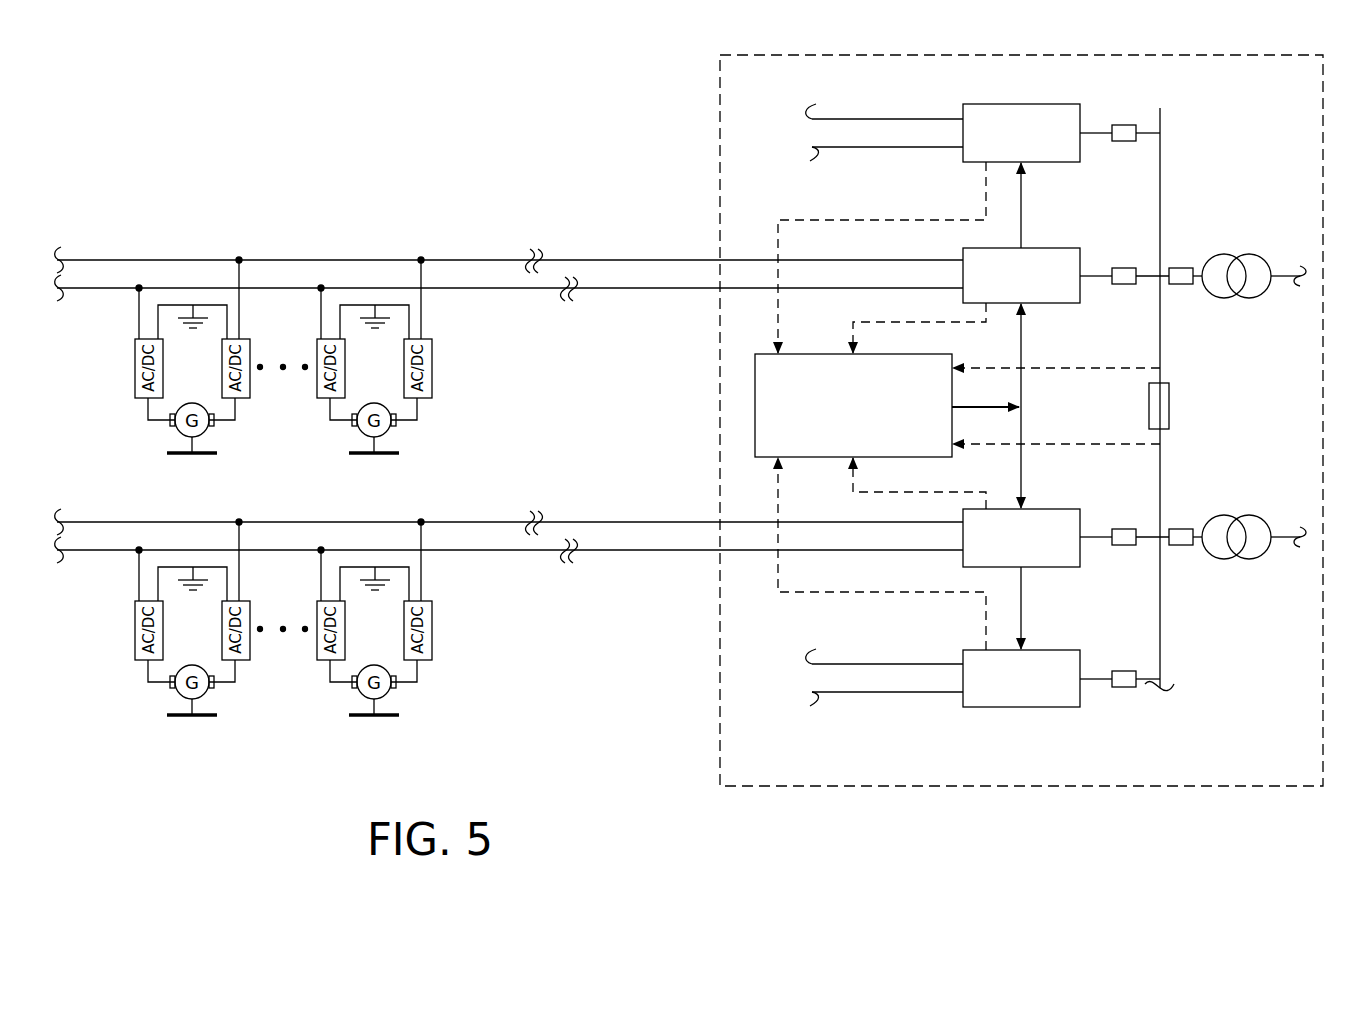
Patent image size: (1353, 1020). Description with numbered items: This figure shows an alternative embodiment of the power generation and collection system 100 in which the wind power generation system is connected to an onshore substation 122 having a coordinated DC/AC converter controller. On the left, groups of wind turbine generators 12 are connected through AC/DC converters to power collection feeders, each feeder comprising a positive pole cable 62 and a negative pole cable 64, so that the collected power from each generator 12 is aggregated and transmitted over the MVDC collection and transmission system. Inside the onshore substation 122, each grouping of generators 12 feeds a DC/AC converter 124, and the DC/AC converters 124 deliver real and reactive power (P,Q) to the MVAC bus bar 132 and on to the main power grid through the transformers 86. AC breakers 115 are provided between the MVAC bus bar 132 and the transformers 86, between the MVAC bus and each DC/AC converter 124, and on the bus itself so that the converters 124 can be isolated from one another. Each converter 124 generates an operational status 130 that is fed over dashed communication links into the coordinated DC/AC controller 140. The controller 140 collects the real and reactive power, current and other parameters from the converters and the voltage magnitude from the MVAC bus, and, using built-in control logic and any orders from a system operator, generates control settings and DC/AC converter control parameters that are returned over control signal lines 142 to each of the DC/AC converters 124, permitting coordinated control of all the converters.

The wind turbine generator 12 is at (158, 430).
The positive pole cable 62 is at (680, 260).
The negative pole cable 64 is at (648, 290).
The transformer 86 is at (1236, 298).
The power generation and collection system 100 is at (683, 125).
The AC breaker 115 is at (1121, 125).
The onshore substation 122 is at (773, 797).
The DC/AC converter 124 is at (1022, 104).
The operational status 130 is at (880, 220).
The MVAC bus bar 132 is at (1162, 197).
The coordinated DC/AC controller 140 is at (755, 400).
The control signal line 142 is at (1028, 212).